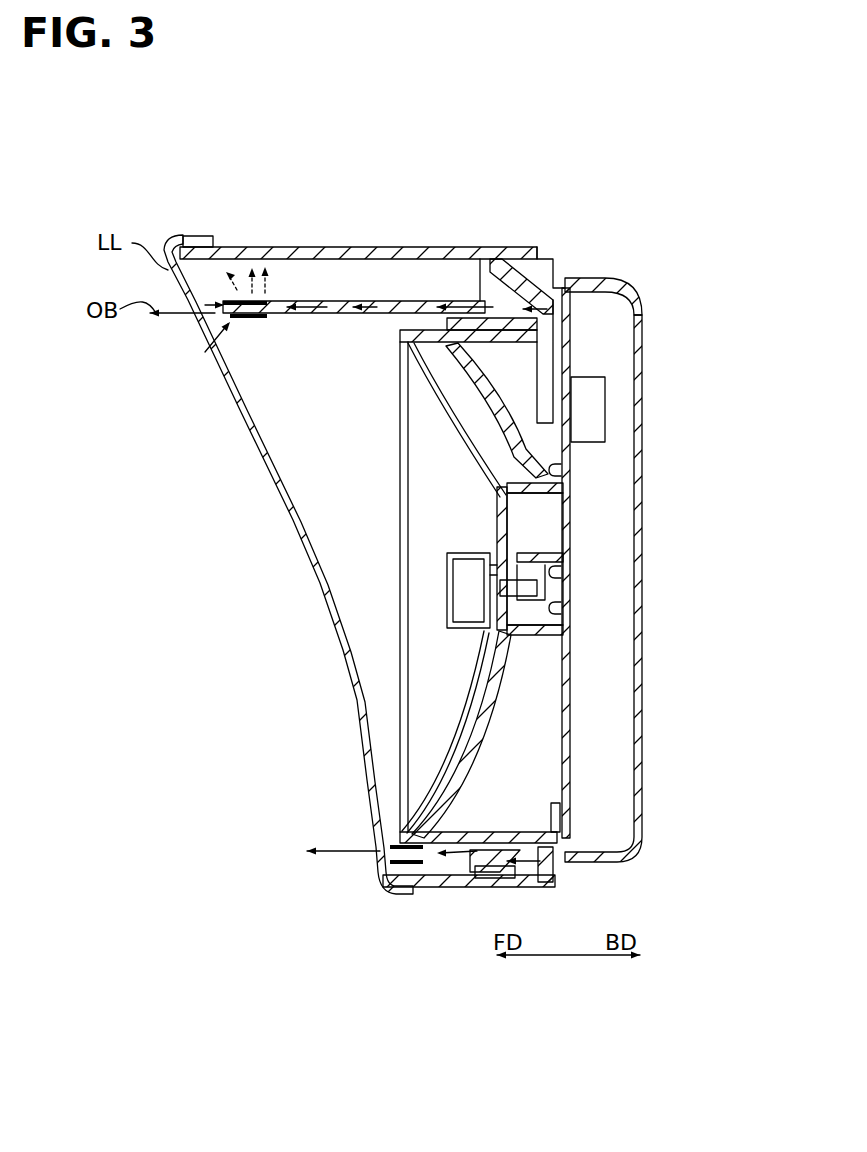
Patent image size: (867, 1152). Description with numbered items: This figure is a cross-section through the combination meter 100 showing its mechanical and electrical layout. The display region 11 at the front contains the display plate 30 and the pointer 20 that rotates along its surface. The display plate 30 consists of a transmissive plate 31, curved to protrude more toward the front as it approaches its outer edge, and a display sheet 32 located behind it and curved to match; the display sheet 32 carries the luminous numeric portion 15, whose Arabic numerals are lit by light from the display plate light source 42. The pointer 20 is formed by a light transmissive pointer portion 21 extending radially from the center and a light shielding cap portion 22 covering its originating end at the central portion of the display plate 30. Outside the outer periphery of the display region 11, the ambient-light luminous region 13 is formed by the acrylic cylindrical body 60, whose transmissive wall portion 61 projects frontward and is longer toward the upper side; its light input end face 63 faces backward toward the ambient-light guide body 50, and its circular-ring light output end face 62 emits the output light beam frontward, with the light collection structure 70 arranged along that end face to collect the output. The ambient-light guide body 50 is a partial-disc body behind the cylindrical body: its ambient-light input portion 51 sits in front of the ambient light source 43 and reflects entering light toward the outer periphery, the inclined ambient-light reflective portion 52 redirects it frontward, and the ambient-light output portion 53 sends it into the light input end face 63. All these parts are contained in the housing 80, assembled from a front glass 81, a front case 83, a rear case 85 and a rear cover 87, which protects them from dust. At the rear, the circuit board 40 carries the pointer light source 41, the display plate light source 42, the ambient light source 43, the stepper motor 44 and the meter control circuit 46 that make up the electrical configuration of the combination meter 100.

The display region 11 is at (420, 416).
The ambient-light luminous region 13 is at (236, 290).
The luminous numeric portion 15 is at (430, 370).
The pointer 20 is at (607, 559).
The pointer portion 21 is at (487, 567).
The cap portion 22 is at (487, 537).
The display plate 30 is at (389, 590).
The transmissive plate 31 is at (445, 775).
The display sheet 32 is at (425, 805).
The circuit board 40 is at (573, 360).
The pointer light source 41 is at (565, 608).
The display plate light source 42 is at (562, 468).
The ambient light source 43 is at (605, 430).
The stepper motor 44 is at (530, 555).
The meter control circuit 46 is at (606, 410).
The ambient-light guide body 50 is at (548, 883).
The ambient-light input portion 51 is at (568, 400).
The ambient-light reflective portion 52 is at (640, 300).
The ambient-light output portion 53 is at (513, 292).
The acrylic cylindrical body 60 is at (325, 300).
The transmissive wall portion 61 is at (417, 308).
The light output end face 62 is at (232, 316).
The light input end face 63 is at (508, 292).
The light collection structure 70 is at (210, 353).
The housing 80 is at (386, 207).
The front glass 81 is at (206, 236).
The front case 83 is at (252, 247).
The rear case 85 is at (433, 333).
The rear cover 87 is at (592, 282).
The combination meter 100 is at (640, 531).